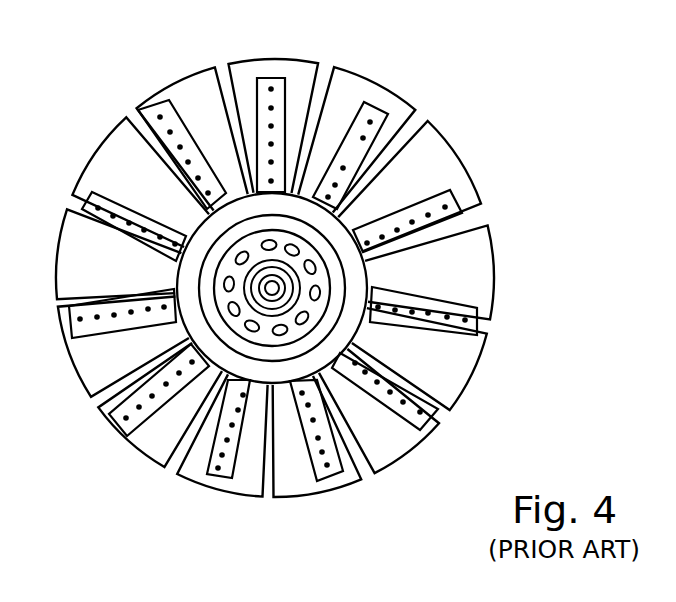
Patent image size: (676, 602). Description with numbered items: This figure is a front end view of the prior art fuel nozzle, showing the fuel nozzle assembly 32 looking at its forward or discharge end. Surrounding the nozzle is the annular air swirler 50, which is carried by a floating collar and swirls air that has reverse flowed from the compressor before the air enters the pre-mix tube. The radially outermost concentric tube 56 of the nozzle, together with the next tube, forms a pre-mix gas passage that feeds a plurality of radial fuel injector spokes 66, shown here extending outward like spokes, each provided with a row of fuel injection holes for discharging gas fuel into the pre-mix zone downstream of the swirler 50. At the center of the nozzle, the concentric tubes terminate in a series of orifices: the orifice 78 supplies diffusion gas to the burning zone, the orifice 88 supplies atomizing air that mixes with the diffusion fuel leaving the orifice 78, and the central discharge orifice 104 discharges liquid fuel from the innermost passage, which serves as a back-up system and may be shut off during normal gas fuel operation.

The fuel nozzle assembly 32 is at (463, 160).
The air swirler 50 is at (169, 87).
The radially outermost concentric tube 56 is at (343, 273).
The radial fuel injector spoke 66 is at (271, 84).
The orifice 78 is at (318, 293).
The orifice 88 is at (270, 312).
The discharge orifice 104 is at (265, 290).